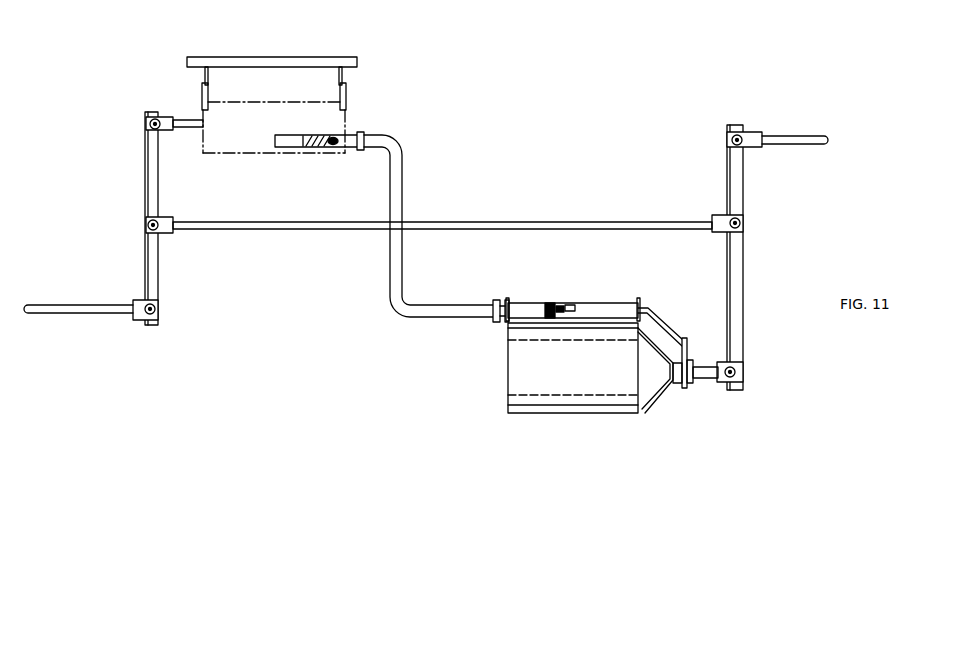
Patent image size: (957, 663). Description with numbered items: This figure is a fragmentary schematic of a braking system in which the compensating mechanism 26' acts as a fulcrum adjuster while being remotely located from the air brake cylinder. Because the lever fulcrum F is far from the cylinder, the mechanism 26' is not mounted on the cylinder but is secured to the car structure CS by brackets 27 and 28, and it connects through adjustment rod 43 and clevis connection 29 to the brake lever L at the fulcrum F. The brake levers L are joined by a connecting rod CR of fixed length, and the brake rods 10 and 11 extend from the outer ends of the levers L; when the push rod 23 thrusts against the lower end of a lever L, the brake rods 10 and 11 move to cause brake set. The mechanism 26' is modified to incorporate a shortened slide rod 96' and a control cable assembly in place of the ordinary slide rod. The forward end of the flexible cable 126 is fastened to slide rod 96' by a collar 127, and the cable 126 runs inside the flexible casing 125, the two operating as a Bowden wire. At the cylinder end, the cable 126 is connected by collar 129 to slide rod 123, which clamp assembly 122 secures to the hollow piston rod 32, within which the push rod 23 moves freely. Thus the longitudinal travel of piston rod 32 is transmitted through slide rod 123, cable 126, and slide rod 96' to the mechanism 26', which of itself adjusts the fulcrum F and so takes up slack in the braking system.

The car structure CS is at (286, 67).
The lever fulcrum F is at (159, 109).
The clevis connection 29 is at (447, 235).
The adjustment rod 43 is at (188, 137).
The bracket 27 is at (362, 202).
The bracket 28 is at (502, 202).
The compensating mechanism 26' is at (274, 140).
The slide rod 96' is at (318, 155).
The collar 127 is at (315, 157).
The flexible cable 126 is at (451, 228).
The connecting rod CR is at (442, 210).
The flexible casing 125 is at (436, 228).
The lever L is at (439, 251).
The brake rod 10 is at (78, 297).
The brake rod 11 is at (795, 161).
The collar 129 is at (581, 294).
The slide rod 123 is at (605, 350).
The piston rod 32 is at (699, 361).
The push rod 23 is at (705, 393).
The clamp assembly 122 is at (667, 383).